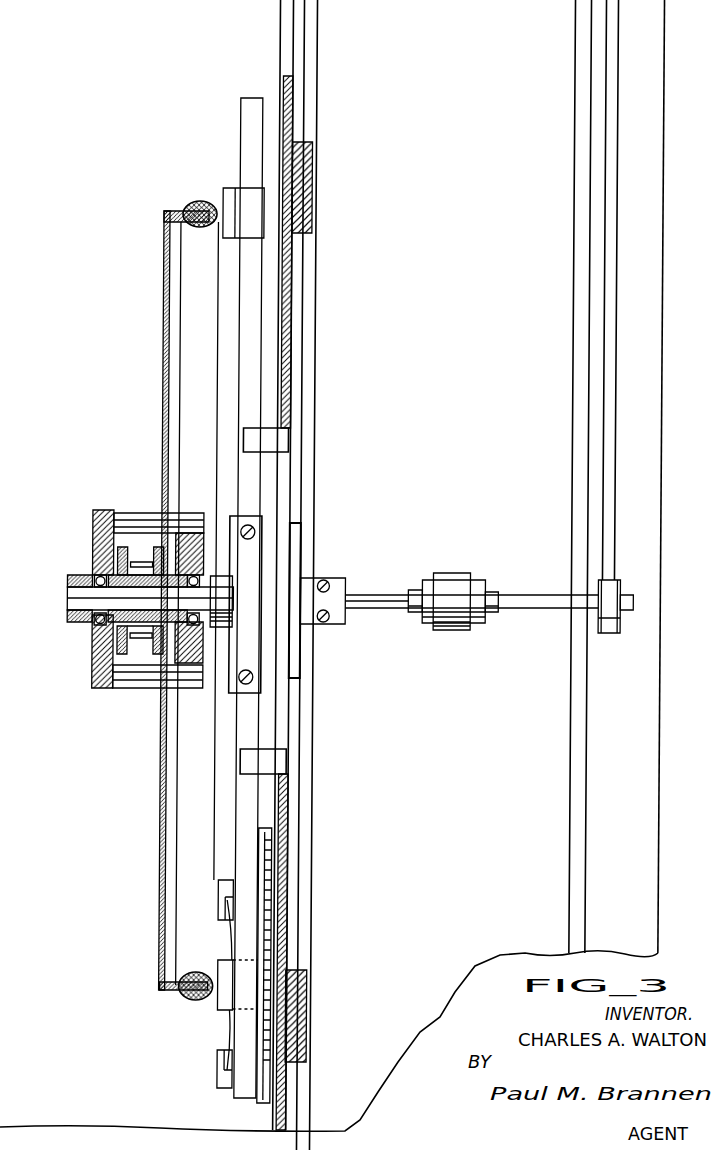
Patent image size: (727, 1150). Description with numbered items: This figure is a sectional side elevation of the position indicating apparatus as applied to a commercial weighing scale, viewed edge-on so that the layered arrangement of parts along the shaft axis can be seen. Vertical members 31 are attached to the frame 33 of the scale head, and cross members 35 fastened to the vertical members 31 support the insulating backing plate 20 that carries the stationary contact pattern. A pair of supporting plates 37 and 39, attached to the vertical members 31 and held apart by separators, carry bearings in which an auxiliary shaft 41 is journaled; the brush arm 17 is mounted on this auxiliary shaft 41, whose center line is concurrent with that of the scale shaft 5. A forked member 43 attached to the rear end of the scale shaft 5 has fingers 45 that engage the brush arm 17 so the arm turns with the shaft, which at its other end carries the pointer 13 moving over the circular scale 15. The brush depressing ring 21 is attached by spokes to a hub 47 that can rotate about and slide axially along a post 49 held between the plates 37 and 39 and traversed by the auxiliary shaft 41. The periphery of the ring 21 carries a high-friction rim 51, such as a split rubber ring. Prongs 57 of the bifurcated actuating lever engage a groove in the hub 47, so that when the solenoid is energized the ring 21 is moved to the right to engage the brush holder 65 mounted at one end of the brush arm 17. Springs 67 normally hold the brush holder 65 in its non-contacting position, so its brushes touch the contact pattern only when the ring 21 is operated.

The shaft 5 is at (536, 596).
The pointer 13 is at (615, 276).
The circular scale 15 is at (575, 417).
The brush arm 17 is at (241, 127).
The backing plate 20 is at (294, 120).
The brush depressing ring 21 is at (166, 211).
The vertical members 31 is at (281, 22).
The frame 33 is at (318, 27).
The cross members 35 is at (311, 207).
The supporting plate 37 is at (96, 512).
The supporting plate 39 is at (204, 518).
The auxiliary shaft 41 is at (148, 518).
The forked member 43 is at (289, 488).
The fingers 45 is at (247, 438).
The hub 47 is at (126, 627).
The post 49 is at (120, 620).
The rim 51 is at (191, 1000).
The prongs 57 is at (143, 562).
The brush holder 65 is at (268, 1099).
The springs 67 is at (228, 947).